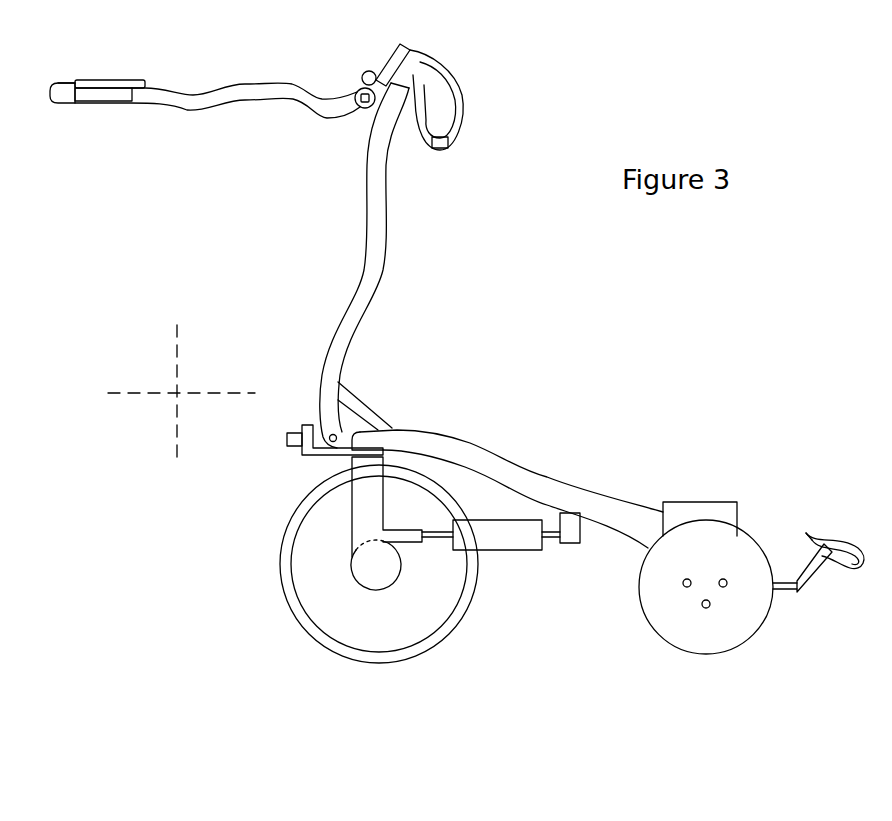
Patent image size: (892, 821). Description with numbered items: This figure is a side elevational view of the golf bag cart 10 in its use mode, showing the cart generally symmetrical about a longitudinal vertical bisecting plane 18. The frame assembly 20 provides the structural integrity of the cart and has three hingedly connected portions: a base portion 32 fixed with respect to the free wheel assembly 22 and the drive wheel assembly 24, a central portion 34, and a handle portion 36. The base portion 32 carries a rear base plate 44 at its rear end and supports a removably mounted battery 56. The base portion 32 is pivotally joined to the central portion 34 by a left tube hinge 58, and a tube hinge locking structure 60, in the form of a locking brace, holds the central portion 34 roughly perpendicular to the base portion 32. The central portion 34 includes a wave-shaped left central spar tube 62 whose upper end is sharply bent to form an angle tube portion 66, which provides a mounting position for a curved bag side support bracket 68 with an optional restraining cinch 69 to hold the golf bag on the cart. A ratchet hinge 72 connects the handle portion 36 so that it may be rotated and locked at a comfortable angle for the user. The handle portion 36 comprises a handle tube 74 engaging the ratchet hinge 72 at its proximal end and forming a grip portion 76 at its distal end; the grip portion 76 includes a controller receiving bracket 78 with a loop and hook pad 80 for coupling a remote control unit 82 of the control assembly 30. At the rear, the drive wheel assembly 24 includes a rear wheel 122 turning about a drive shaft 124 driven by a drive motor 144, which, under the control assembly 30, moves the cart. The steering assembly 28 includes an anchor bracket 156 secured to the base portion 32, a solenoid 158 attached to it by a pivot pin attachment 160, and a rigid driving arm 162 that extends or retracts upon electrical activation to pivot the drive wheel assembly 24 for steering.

The cart 10 is at (177, 540).
The bisecting plane 18 is at (177, 393).
The frame assembly 20 is at (424, 276).
The free wheel assembly 22 is at (714, 674).
The drive wheel assembly 24 is at (262, 617).
The steering assembly 28 is at (552, 557).
The control assembly 30 is at (152, 66).
The base portion 32 is at (549, 471).
The central portion 34 is at (390, 205).
The handle portion 36 is at (193, 88).
The rear base plate 44 is at (287, 438).
The battery 56 is at (697, 512).
The left tube hinge 58 is at (327, 443).
The tube hinge locking structure 60 is at (363, 408).
The left central spar tube 62 is at (368, 232).
The angle tube portion 66 is at (368, 71).
The curved bag side support bracket 68 is at (412, 49).
The restraining cinch 69 is at (459, 124).
The ratchet hinge 72 is at (361, 109).
The handle tube 74 is at (196, 110).
The grip portion 76 is at (113, 103).
The controller receiving bracket 78 is at (75, 103).
The loop and hook pad 80 is at (63, 83).
The remote control unit 82 is at (97, 82).
The rear wheel 122 is at (337, 612).
The drive shaft 124 is at (347, 515).
The drive motor 144 is at (383, 590).
The anchor bracket 156 is at (580, 533).
The solenoid 158 is at (497, 552).
The pivot pin attachment 160 is at (437, 530).
The driving arm 162 is at (413, 540).